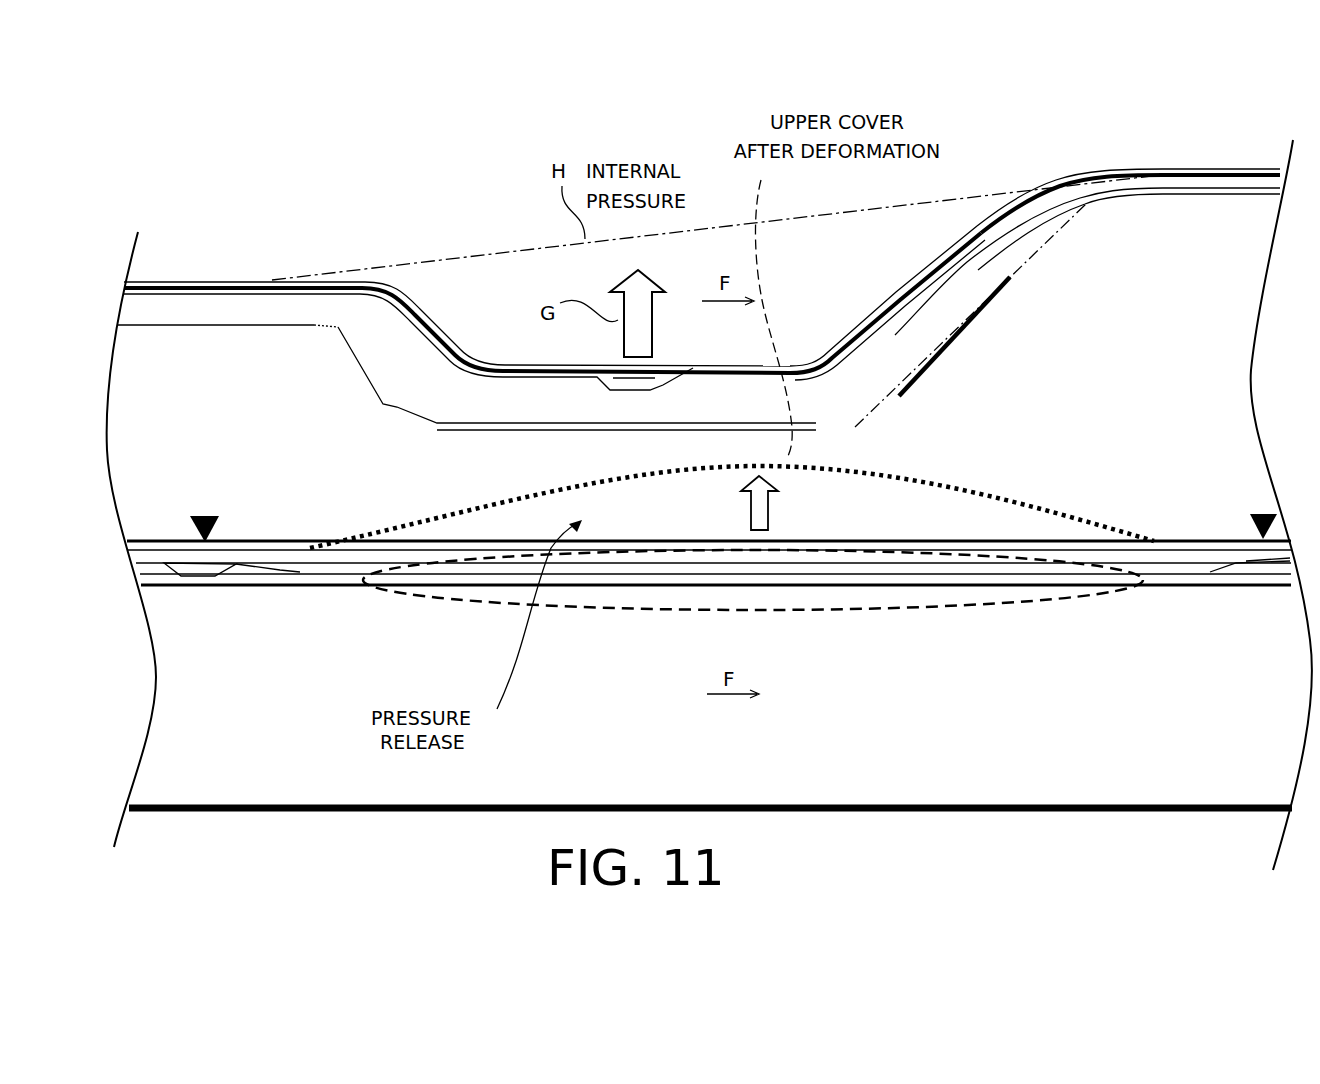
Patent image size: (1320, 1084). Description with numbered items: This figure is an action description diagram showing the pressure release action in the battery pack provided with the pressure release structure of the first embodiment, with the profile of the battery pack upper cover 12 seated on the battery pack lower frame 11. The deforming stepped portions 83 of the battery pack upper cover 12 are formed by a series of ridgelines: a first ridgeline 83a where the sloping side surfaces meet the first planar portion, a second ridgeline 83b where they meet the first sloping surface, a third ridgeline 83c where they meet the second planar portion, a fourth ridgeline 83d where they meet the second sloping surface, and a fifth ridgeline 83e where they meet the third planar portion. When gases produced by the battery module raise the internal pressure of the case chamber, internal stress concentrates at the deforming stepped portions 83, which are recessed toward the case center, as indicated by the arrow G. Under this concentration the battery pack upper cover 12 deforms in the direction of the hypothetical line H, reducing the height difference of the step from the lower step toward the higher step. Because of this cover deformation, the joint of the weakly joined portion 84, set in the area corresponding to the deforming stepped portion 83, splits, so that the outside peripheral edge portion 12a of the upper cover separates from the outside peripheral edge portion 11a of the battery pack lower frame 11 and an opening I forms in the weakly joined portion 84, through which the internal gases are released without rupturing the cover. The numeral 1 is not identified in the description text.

The battery pack 1 is at (826, 478).
The battery pack lower frame 11 is at (1180, 773).
The outside peripheral edge portion of the battery pack lower frame 11a is at (305, 590).
The battery pack upper cover 12 is at (1212, 171).
The outside peripheral edge portion of the battery pack upper cover 12a is at (303, 538).
The deforming stepped portions 83 is at (702, 221).
The first ridgeline 83a is at (1128, 163).
The second ridgeline 83b is at (876, 311).
The third ridgeline 83c is at (523, 363).
The fourth ridgeline 83d is at (410, 320).
The fifth ridgeline 83e is at (215, 285).
The weakly joined portion 84 is at (846, 614).